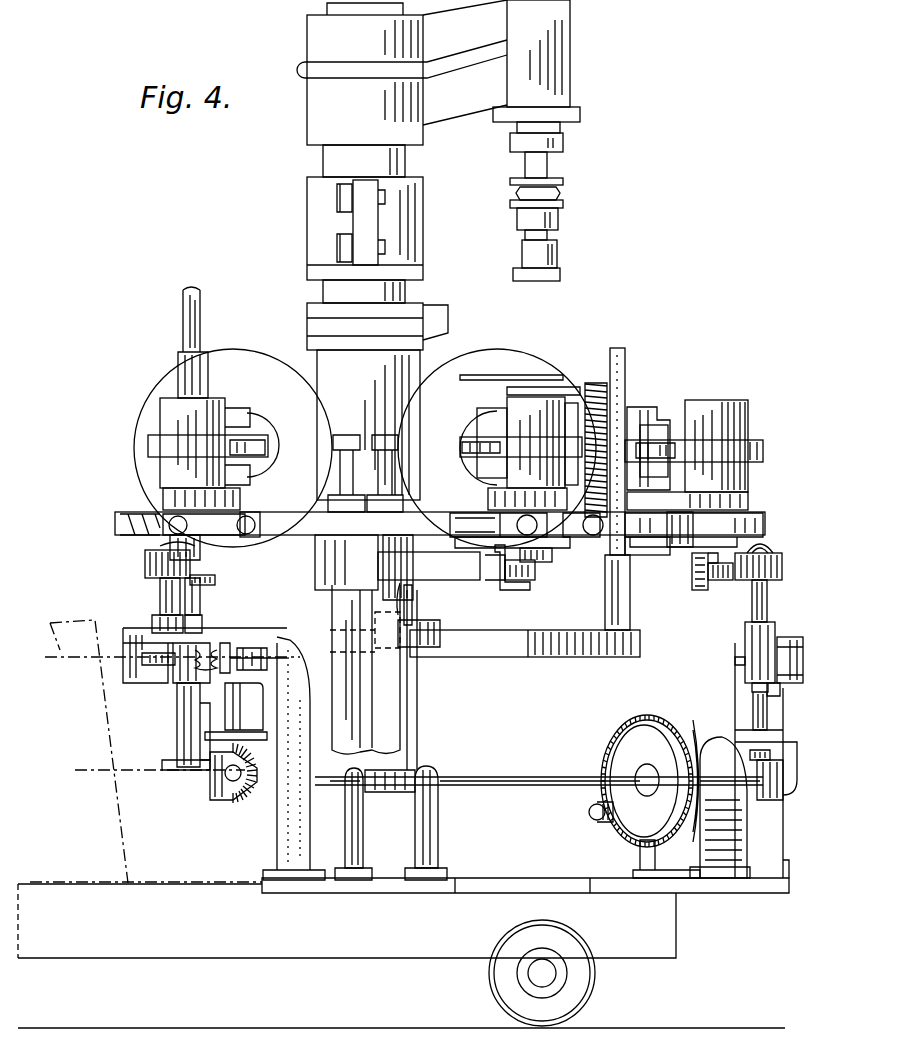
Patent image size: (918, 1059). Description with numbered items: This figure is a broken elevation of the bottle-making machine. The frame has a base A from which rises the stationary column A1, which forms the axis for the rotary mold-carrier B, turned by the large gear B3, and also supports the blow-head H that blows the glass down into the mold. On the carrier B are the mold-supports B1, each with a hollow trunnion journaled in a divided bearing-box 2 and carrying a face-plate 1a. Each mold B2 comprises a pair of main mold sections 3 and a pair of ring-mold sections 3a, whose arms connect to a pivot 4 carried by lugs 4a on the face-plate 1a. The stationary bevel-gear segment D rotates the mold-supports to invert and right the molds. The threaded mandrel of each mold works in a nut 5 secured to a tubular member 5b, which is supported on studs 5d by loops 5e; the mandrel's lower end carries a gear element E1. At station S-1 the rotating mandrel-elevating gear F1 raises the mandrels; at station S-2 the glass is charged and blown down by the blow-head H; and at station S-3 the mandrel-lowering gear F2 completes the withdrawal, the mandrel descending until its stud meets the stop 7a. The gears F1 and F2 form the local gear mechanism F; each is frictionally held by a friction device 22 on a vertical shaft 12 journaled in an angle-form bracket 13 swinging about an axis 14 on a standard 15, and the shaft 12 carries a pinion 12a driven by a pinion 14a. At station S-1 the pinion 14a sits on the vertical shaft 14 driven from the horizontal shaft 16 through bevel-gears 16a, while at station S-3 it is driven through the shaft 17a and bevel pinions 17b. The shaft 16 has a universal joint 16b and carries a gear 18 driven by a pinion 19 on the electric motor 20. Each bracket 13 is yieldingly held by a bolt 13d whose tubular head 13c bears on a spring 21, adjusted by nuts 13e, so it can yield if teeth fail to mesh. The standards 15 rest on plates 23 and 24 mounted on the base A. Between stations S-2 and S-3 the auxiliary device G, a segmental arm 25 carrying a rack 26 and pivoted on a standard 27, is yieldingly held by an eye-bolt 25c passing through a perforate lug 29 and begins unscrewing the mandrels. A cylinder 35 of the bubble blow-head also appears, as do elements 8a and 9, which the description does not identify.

The stationary column A1 is at (338, 10).
The blow-head H is at (557, 272).
The divided bearing-box 2 is at (328, 418).
The mandrel-lowering station S-3 is at (233, 431).
The glass-charging station S-2 is at (497, 433).
The mandrel-elevating station S-1 is at (455, 342).
The mold-support B1 is at (654, 360).
The mold B2 is at (160, 412).
The main mold sections 3 is at (748, 422).
The pivot 4 is at (645, 410).
The lugs 4a is at (672, 418).
The ring-mold sections 3a is at (163, 498).
The spindle shaft 8a is at (262, 452).
The face-plate 1a is at (616, 352).
The rack 9 is at (600, 390).
The rotary mold-carrier B is at (305, 530).
The stationary bevel-gear segment D is at (130, 517).
The studs 5d is at (270, 516).
The loops or rings 5e is at (250, 514).
The tubular member 5b is at (165, 538).
The nut 5 is at (640, 555).
The mandrel-lowering gear element F2 is at (148, 562).
The gear element E1 is at (215, 578).
The stop 7a is at (530, 585).
The gear segment or rack 26 is at (505, 585).
The auxiliary mandrel-actuating device G is at (468, 588).
The segmental arm 25 is at (429, 583).
The perforate lug 29 is at (417, 605).
The eye-bolt 25c is at (445, 648).
The standard 27 is at (374, 677).
The large gear B3 is at (503, 652).
The vertical shaft 12 is at (162, 602).
The movable bracket 13 is at (125, 670).
The pinion 12a is at (155, 662).
The tubular head 13c is at (178, 686).
The spring 21 is at (206, 648).
The nuts 13e is at (252, 648).
The bolt 13d is at (246, 686).
The shaft 17a is at (190, 714).
The cylinder 35 is at (192, 765).
The bevel pinions 17b is at (225, 790).
The standard 15 is at (275, 822).
The local gear mechanism F is at (535, 778).
The horizontal shaft 16 is at (330, 798).
The universal joint 16b is at (400, 798).
The pinion 19 is at (597, 820).
The gear 18 is at (640, 738).
The electric motor 20 is at (720, 807).
The vertical shaft 14 is at (752, 712).
The pinion 14a is at (778, 695).
The bevel-gears 16a is at (770, 800).
The friction device 22 is at (762, 545).
The mandrel-elevating gear element F1 is at (777, 560).
The base A is at (401, 956).
The plate 23 is at (330, 885).
The plate 24 is at (716, 888).